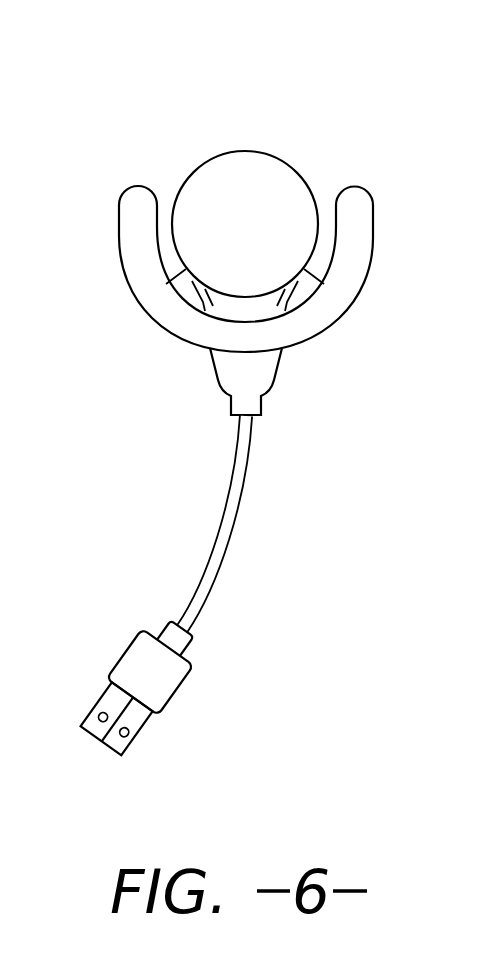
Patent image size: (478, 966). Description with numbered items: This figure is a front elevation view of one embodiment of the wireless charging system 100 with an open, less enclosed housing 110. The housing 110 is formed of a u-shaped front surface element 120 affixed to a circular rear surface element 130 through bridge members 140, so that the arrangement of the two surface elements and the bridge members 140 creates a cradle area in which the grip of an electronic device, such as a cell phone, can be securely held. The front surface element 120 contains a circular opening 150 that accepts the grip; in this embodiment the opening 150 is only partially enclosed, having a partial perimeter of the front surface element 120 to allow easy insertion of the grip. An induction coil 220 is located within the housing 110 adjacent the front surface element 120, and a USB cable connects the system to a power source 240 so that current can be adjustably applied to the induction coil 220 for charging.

The wireless charging system 100 is at (143, 103).
The housing 110 is at (117, 213).
The front surface element 120 is at (374, 213).
The rear surface element 130 is at (258, 173).
The bridge members 140 is at (187, 288).
The opening 150 is at (234, 226).
The induction coil 220 is at (243, 334).
The power source 240 is at (253, 374).